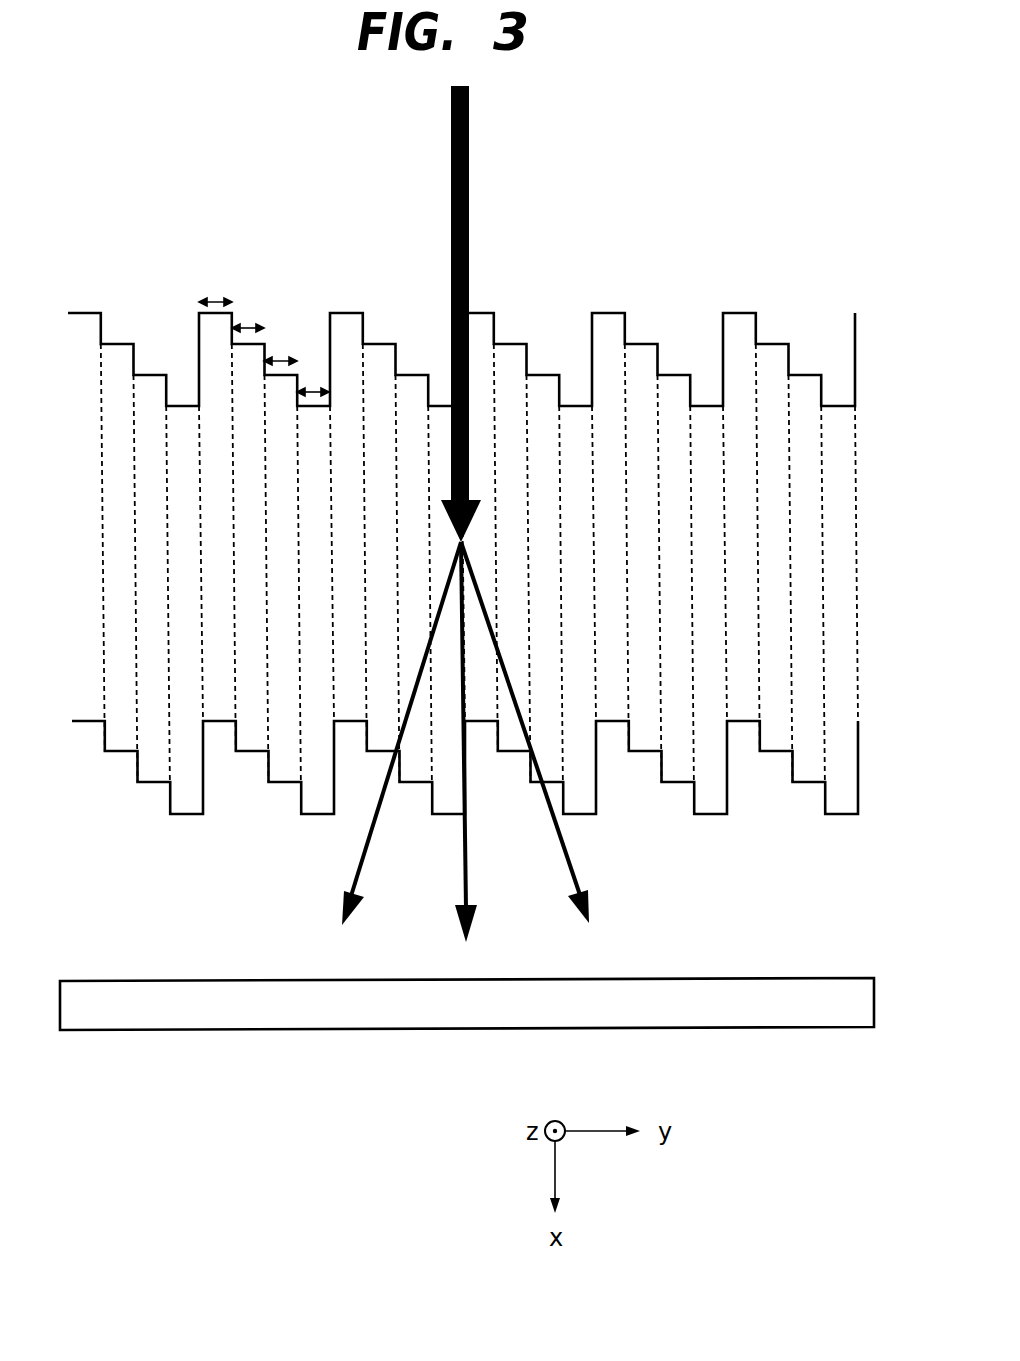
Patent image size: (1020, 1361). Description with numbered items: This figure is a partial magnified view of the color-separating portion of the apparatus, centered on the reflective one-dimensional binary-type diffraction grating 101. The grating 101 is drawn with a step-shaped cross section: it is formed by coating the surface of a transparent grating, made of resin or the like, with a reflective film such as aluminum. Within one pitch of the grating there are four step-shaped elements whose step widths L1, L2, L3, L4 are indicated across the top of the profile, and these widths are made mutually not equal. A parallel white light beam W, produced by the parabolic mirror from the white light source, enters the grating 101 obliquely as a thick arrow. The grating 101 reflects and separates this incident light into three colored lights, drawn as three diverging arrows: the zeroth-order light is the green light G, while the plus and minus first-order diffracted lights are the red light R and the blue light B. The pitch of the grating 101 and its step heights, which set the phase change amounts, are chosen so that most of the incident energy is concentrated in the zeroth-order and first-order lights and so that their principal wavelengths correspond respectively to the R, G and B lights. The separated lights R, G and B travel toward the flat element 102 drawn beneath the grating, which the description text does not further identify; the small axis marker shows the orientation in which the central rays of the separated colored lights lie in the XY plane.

The reflective one-dimensional binary-type diffraction grating 101 is at (847, 518).
The light receiving substrate 102 is at (832, 978).
The white light beam W is at (472, 314).
The red light R is at (397, 752).
The green light G is at (466, 760).
The blue light B is at (530, 752).
The step width L1 is at (216, 287).
The step width L2 is at (249, 312).
The step width L3 is at (280, 346).
The step width L4 is at (313, 377).